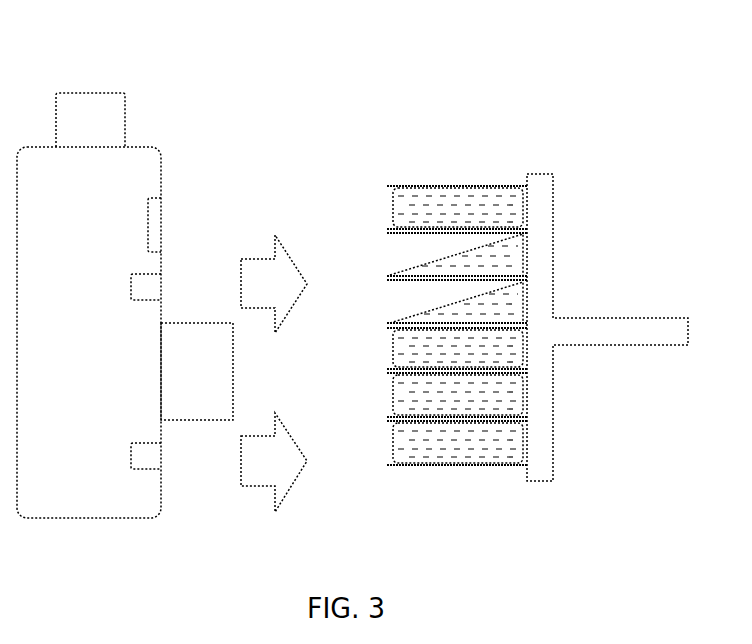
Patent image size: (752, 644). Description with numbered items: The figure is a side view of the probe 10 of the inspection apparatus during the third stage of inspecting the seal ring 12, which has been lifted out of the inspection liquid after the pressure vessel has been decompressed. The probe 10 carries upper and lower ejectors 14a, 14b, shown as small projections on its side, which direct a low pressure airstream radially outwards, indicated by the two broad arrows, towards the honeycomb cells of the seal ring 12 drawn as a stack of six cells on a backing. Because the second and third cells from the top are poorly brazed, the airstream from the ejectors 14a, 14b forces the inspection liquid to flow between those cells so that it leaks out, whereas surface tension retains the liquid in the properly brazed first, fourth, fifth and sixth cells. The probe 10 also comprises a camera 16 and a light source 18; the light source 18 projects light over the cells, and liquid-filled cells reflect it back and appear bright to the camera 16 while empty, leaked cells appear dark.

The inspection probe 10 is at (149, 105).
The seal ring 12 is at (657, 278).
The upper ejector 14a is at (145, 288).
The lower ejector 14b is at (145, 457).
The camera 16 is at (207, 369).
The light source 18 is at (157, 223).